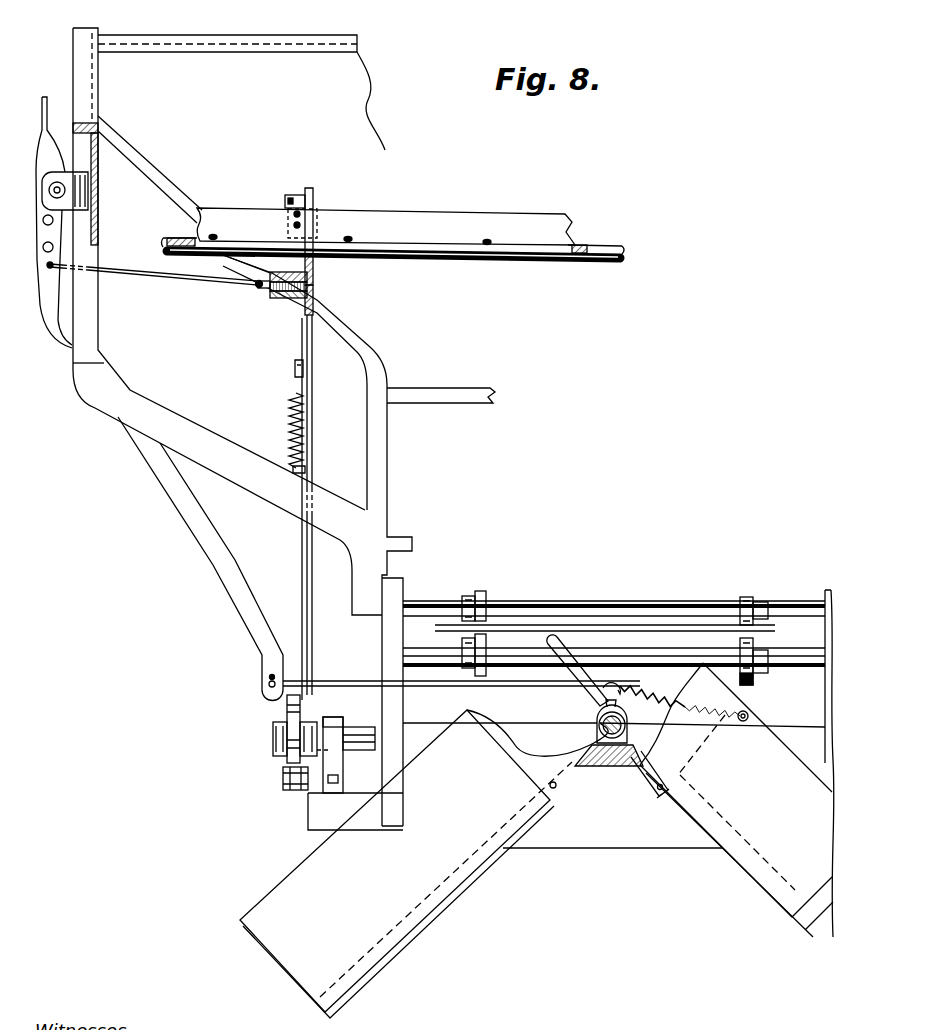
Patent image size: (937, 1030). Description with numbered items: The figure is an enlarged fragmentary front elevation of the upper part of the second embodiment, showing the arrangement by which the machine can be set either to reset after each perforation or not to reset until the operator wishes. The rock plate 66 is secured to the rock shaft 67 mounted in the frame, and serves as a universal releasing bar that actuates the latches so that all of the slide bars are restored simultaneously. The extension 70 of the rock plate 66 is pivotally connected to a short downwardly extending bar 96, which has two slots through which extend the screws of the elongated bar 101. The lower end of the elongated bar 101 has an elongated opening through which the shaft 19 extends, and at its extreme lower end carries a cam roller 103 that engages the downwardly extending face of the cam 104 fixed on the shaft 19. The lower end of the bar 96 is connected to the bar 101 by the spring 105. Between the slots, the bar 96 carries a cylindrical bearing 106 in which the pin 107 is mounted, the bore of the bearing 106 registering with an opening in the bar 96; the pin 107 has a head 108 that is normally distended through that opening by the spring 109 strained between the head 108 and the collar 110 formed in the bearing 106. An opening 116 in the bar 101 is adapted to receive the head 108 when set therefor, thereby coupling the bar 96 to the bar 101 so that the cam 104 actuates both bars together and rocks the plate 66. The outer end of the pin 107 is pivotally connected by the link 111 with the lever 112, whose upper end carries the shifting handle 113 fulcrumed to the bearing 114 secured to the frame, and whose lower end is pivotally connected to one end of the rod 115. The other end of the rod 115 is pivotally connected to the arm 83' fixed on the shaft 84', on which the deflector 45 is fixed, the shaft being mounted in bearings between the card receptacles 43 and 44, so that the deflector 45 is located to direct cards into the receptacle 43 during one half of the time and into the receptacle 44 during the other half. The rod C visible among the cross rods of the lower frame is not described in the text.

The bearing 114 is at (63, 190).
The shifting handle 113 is at (55, 233).
The link 111 is at (150, 269).
The collar 110 is at (257, 285).
The head 108 is at (300, 295).
The pin 107 is at (262, 266).
The spring 109 is at (283, 270).
The extension 70 is at (297, 196).
The opening 116 is at (317, 283).
The cylindrical bearing 106 is at (317, 301).
The downwardly extending bar 96 is at (303, 345).
The spring 105 is at (293, 428).
The elongated bar 101 is at (305, 540).
The lever 112 is at (198, 520).
The rod 115 is at (358, 658).
The cam 104 is at (287, 703).
The cam roller 103 is at (284, 782).
The shaft 19 is at (358, 727).
The rod C is at (693, 630).
The deflector 45 is at (573, 672).
The shaft 84' is at (609, 752).
The arm 83' is at (675, 697).
The card receptacle 43 is at (406, 864).
The card receptacle 44 is at (736, 800).
The rock plate 66 is at (533, 223).
The rock shaft 67 is at (618, 223).